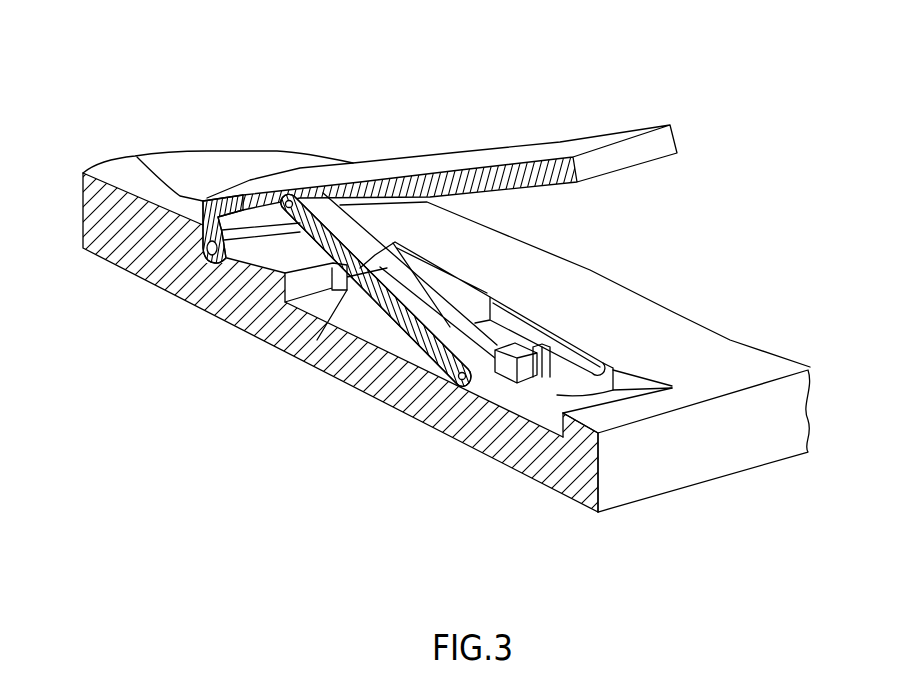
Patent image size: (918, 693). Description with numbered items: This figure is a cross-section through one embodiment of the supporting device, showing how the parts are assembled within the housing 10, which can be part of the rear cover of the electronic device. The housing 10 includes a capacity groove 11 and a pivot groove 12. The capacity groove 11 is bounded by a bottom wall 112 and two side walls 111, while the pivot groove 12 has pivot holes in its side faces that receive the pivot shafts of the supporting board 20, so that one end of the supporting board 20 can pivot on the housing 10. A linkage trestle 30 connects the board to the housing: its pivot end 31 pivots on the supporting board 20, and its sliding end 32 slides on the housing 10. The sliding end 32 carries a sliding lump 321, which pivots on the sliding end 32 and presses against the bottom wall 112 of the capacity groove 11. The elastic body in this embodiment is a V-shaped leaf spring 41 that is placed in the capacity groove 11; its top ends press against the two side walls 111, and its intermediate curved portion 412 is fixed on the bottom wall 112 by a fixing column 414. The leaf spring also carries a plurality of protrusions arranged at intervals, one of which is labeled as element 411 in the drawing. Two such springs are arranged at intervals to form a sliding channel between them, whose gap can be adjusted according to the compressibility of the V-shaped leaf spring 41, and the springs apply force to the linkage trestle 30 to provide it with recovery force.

The housing 10 is at (202, 195).
The capacity groove 11 is at (693, 395).
The side walls 111 is at (457, 285).
The bottom wall 112 is at (553, 400).
The pivot groove 12 is at (133, 158).
The supporting board 20 is at (422, 170).
The linkage trestle 30 is at (387, 268).
The pivot end 31 is at (233, 267).
The sliding end 32 is at (460, 380).
The sliding lump 321 is at (513, 378).
The V-shaped leaf spring 41 is at (563, 317).
The post 411 is at (542, 347).
The intermediate curved portion 412 is at (603, 350).
The fixing column 414 is at (617, 369).